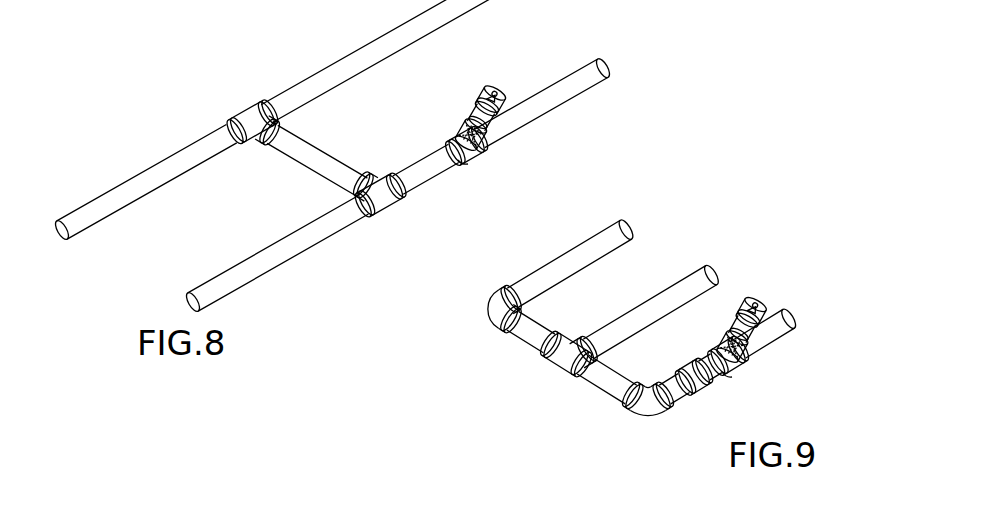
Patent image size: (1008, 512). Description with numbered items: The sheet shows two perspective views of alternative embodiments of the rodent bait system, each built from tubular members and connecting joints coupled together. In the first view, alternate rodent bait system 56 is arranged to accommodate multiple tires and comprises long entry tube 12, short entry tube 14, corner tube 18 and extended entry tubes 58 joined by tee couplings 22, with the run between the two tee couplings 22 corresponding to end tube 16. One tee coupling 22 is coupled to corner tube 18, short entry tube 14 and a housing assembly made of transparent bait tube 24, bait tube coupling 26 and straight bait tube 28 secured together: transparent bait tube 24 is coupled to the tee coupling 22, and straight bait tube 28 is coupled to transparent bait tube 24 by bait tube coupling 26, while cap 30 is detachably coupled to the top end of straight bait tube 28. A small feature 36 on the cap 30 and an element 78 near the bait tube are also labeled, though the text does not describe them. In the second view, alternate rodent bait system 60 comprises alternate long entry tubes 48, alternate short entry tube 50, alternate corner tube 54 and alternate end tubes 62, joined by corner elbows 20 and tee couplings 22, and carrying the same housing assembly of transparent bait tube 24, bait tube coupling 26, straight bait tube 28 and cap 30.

In FIG. 8, the long entry tube 12 is at (374, 44).
In FIG. 8, the short entry tube 14 is at (567, 93).
In FIG. 8, the end tube 16 is at (315, 157).
In FIG. 8, the corner tube 18 is at (421, 182).
In FIG. 9, the corner elbows 20 is at (485, 306).
In FIG. 8, the tee coupling 22 is at (247, 118).
In FIG. 9, the tee coupling 22 is at (568, 361).
In FIG. 8, the transparent bait tube 24 is at (458, 136).
In FIG. 9, the transparent bait tube 24 is at (720, 350).
In FIG. 8, the bait tube coupling 26 is at (483, 140).
In FIG. 9, the bait tube coupling 26 is at (743, 356).
In FIG. 8, the straight bait tube 28 is at (488, 122).
In FIG. 9, the straight bait tube 28 is at (745, 332).
In FIG. 8, the cap 30 is at (500, 88).
In FIG. 9, the cap 30 is at (763, 301).
In FIG. 8, the indicator 36 is at (488, 93).
In FIG. 9, the indicator 36 is at (757, 298).
In FIG. 9, the alternate long entry tubes 48 is at (607, 249).
In FIG. 9, the alternate short entry tube 50 is at (790, 326).
In FIG. 9, the alternate corner tube 54 is at (687, 394).
In FIG. 8, the alternate rodent bait system 56 is at (158, 137).
In FIG. 8, the extended entry tubes 58 is at (142, 196).
In FIG. 9, the alternate rodent bait system 60 is at (745, 227).
In FIG. 9, the alternate end tubes 62 is at (520, 333).
In FIG. 8, the sensor 78 is at (462, 165).
In FIG. 9, the sensor 78 is at (727, 380).